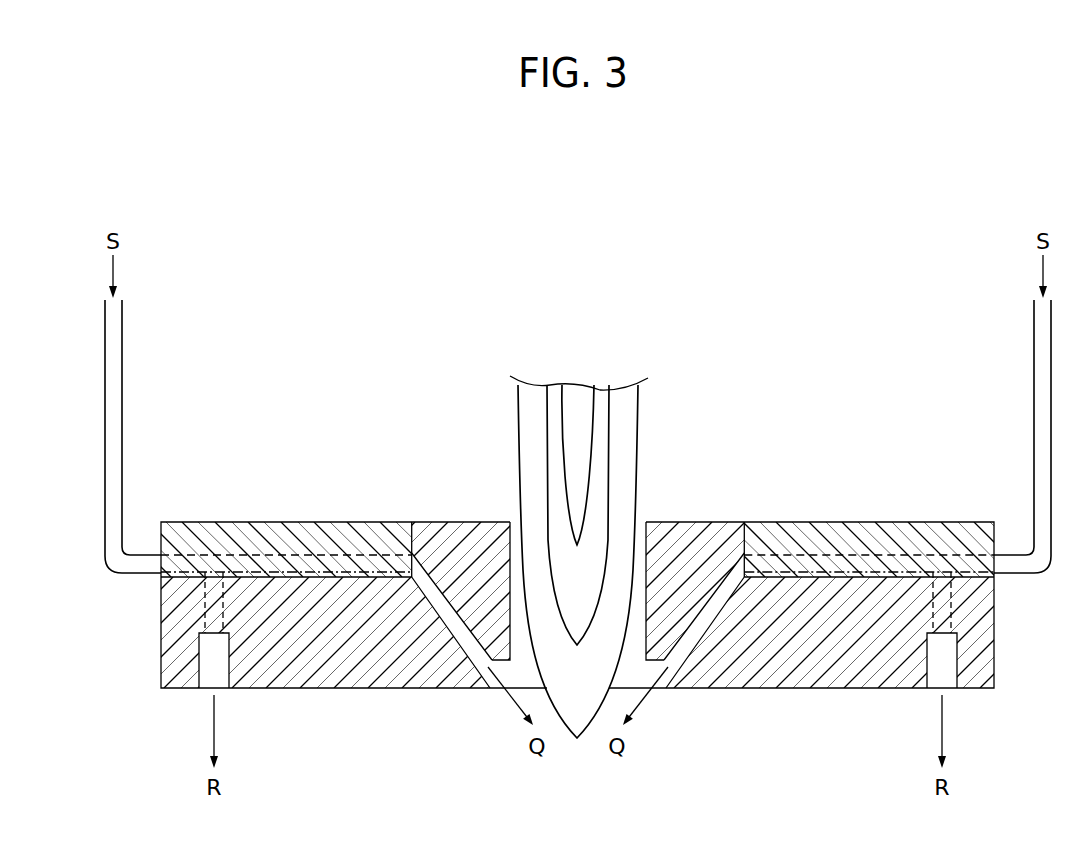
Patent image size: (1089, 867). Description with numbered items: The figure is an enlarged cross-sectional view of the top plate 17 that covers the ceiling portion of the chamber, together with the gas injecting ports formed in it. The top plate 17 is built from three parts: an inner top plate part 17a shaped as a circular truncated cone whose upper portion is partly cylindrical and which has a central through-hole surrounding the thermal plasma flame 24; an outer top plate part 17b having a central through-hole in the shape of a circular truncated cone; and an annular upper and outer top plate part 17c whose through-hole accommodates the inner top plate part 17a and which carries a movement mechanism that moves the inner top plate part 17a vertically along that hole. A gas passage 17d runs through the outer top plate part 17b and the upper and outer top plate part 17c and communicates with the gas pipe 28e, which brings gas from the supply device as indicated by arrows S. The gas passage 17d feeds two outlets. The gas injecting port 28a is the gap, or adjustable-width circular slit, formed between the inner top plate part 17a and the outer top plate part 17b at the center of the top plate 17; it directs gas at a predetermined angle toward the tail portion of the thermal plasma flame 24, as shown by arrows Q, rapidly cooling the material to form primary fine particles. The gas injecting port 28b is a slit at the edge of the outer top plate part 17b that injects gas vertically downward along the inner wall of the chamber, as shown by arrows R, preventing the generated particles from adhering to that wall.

The top plate 17 is at (812, 440).
The inner top plate part 17a is at (453, 522).
The outer top plate part 17b is at (170, 604).
The upper and outer top plate part 17c is at (318, 522).
The gas passage 17d is at (234, 555).
The thermal plasma flame 24 is at (568, 437).
The gas injecting port 28a is at (455, 627).
The gas injecting port 28b is at (208, 665).
The gas pipe 28e is at (118, 417).